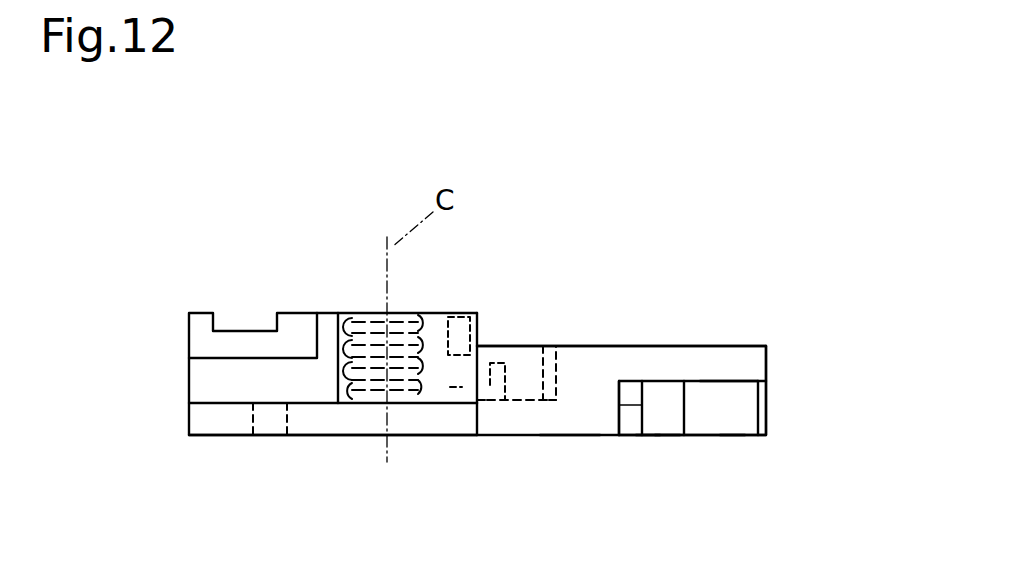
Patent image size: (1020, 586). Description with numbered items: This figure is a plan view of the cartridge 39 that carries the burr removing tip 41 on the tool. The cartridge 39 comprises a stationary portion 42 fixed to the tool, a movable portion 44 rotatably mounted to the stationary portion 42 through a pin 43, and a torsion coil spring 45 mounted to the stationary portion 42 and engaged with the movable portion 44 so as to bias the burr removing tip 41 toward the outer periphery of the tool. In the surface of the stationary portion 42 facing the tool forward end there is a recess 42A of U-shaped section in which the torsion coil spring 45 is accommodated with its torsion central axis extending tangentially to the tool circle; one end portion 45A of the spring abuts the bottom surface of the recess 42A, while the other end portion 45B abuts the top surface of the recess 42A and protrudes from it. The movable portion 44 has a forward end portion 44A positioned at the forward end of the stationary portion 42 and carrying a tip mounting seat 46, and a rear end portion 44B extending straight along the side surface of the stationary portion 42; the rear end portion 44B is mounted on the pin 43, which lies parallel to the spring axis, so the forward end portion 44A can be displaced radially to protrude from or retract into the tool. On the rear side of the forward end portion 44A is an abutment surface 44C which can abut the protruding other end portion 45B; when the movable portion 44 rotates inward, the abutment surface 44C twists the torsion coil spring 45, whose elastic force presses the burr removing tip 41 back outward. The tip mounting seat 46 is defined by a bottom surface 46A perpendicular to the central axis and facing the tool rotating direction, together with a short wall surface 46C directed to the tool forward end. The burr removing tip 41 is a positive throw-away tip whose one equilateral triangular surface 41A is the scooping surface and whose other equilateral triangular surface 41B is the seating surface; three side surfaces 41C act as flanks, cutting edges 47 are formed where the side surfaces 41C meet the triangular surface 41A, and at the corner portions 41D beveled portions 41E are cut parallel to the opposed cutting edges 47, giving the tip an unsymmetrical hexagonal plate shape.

The cartridge 39 is at (181, 290).
The burr removing tip 41 is at (771, 450).
The equilateral triangular surface 41A is at (731, 440).
The equilateral triangular surface 41B is at (723, 375).
The side surface 41C is at (627, 422).
The corner portion 41D is at (646, 444).
The beveled portion 41E is at (667, 437).
The stationary portion 42 is at (262, 368).
The recess 42A is at (443, 340).
The pin 43 is at (270, 425).
The movable portion 44 is at (500, 516).
The forward end portion 44A is at (560, 418).
The rear end portion 44B is at (372, 420).
The abutment surface 44C is at (545, 346).
The torsion coil spring 45 is at (360, 316).
The end portion of torsion coil spring 45A is at (469, 313).
The other end portion of torsion coil spring 45B is at (503, 396).
The tip mounting seat 46 is at (667, 363).
The bottom surface 46A is at (710, 386).
The short wall surface 46C is at (628, 436).
The cutting edge 47 is at (633, 437).